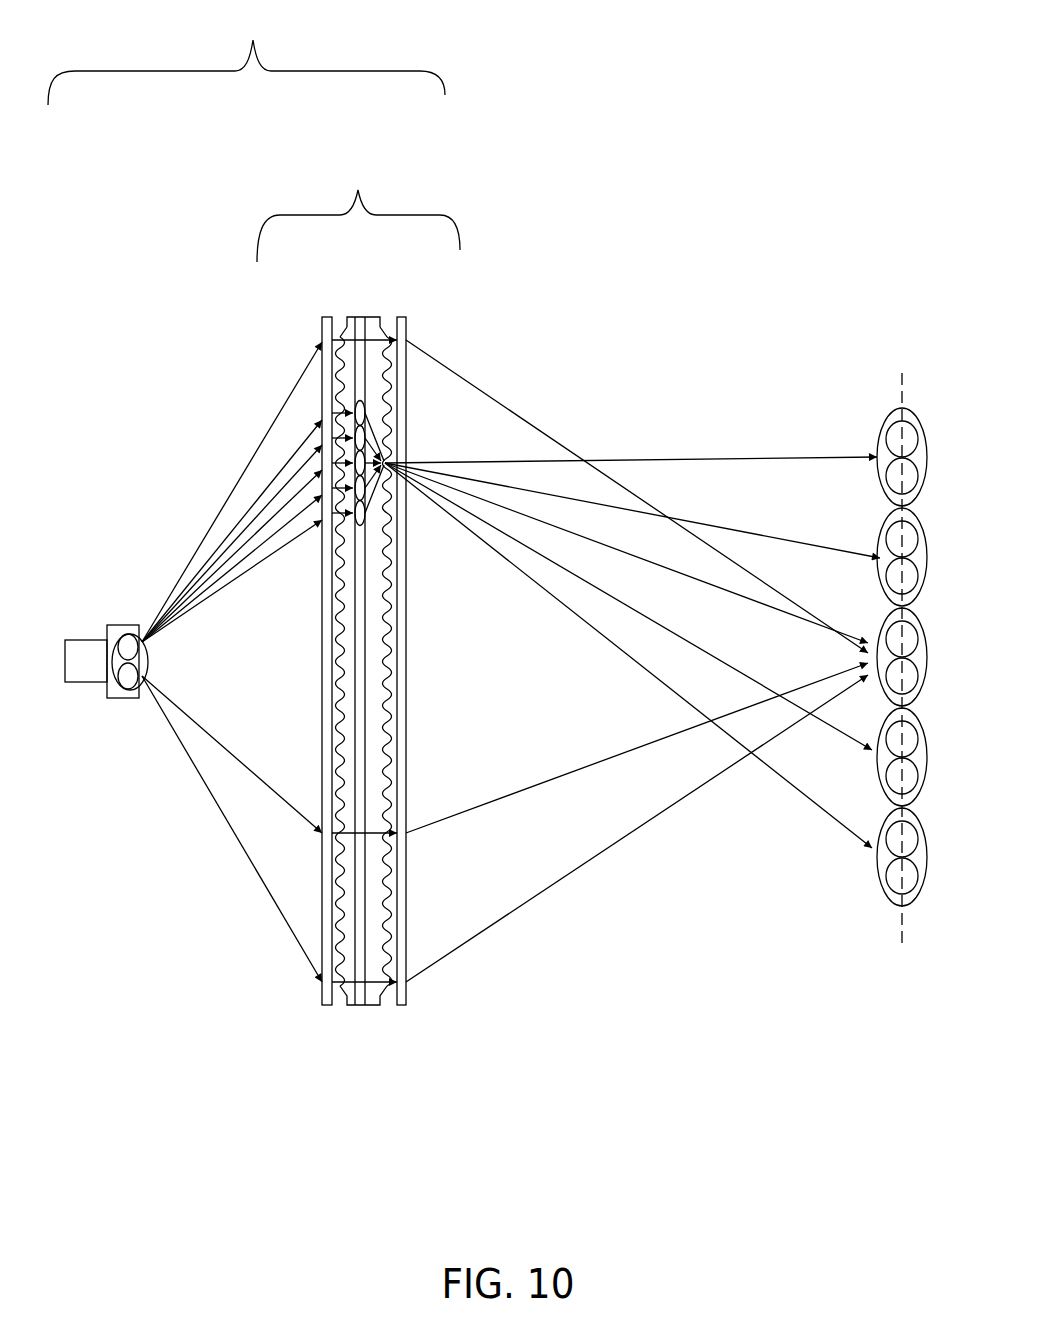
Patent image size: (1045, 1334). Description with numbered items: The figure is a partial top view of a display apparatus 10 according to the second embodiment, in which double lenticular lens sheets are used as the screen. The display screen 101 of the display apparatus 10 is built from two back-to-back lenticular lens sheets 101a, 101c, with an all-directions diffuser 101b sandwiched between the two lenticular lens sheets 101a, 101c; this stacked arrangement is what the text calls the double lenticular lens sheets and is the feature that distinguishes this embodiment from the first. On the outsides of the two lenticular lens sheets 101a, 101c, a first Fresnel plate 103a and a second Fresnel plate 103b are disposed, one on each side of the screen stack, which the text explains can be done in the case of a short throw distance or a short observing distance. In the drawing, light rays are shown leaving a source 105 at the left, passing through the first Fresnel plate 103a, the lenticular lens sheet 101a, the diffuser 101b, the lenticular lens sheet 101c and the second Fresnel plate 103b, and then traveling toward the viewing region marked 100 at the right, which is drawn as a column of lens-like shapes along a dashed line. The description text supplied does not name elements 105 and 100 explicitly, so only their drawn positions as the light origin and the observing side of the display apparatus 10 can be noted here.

The display apparatus 10 is at (246, 54).
The lens array / viewing zones 100 is at (897, 383).
The display screen 101 is at (358, 581).
The lenticular lens sheet 101a is at (353, 317).
The all-directions diffuser 101b is at (358, 317).
The lenticular lens sheet 101c is at (371, 317).
The first Fresnel plate 103a is at (326, 317).
The second Fresnel plate 103b is at (402, 317).
The light source 105 is at (82, 640).